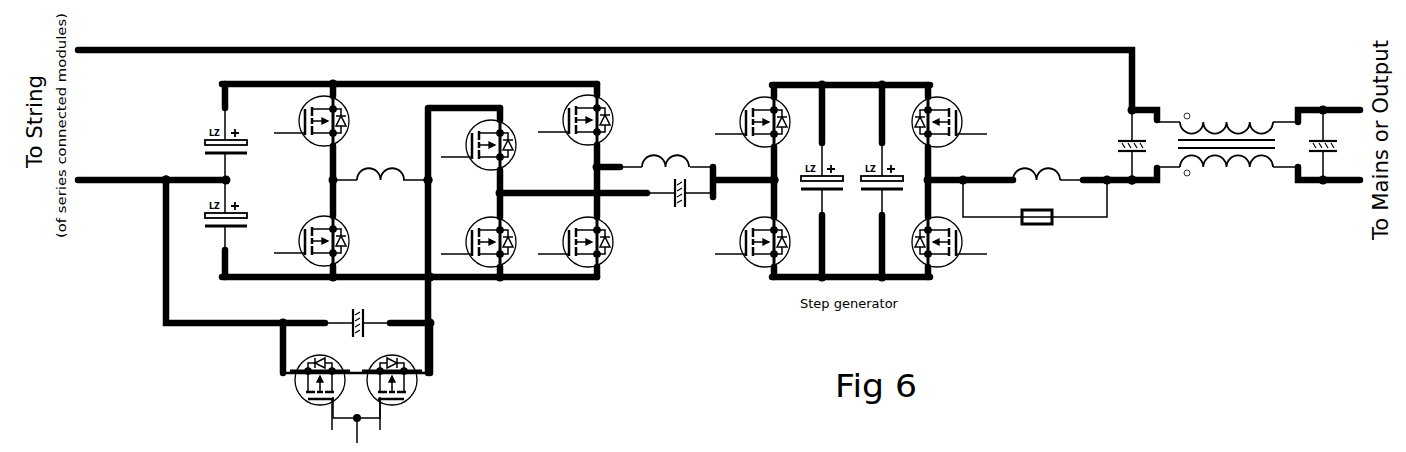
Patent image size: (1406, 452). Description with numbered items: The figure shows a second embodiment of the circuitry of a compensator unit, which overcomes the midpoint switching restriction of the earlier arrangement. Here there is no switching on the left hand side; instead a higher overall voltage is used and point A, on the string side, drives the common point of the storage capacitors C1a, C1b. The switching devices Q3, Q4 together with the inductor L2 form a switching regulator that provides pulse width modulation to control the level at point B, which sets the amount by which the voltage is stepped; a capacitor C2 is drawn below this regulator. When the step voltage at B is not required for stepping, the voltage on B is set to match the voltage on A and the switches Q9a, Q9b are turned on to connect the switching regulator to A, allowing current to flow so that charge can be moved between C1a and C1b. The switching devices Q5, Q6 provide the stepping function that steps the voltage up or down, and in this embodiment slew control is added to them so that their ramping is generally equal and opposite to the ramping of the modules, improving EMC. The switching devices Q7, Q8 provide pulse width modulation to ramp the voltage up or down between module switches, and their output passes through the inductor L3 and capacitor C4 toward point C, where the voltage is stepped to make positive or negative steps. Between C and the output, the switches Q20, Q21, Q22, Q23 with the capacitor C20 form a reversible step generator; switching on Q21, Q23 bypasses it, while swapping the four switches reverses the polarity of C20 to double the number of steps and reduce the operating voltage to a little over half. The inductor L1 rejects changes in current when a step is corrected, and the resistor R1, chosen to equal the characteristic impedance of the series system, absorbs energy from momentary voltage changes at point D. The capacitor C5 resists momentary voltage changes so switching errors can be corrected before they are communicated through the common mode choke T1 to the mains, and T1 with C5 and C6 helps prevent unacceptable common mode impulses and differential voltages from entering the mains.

The point A is at (138, 167).
The point B is at (438, 190).
The point C is at (753, 166).
The point D is at (1128, 196).
The electrolytic capacitor C1a is at (200, 142).
The electrolytic capacitor C1b is at (238, 229).
The switching device Q3 is at (311, 135).
The switching device Q4 is at (311, 234).
The inductor L2 is at (380, 164).
The capacitor C2 is at (344, 315).
The switching device Q9a is at (311, 392).
The switching device Q9b is at (394, 392).
The switching device Q5 is at (488, 147).
The switching device Q6 is at (488, 240).
The switching device Q7 is at (584, 120).
The switching device Q8 is at (584, 240).
The inductor L3 is at (665, 152).
The capacitor C4 is at (679, 209).
The switching device Q20 is at (752, 115).
The switching device Q21 is at (752, 250).
The switching device Q22 is at (949, 115).
The switching device Q23 is at (949, 250).
The capacitor C20 is at (852, 161).
The inductor L1 is at (1025, 164).
The resistor R1 is at (1037, 232).
The capacitor C5 is at (1115, 131).
The common mode choke T1 is at (1226, 131).
The capacitor C6 is at (1323, 115).